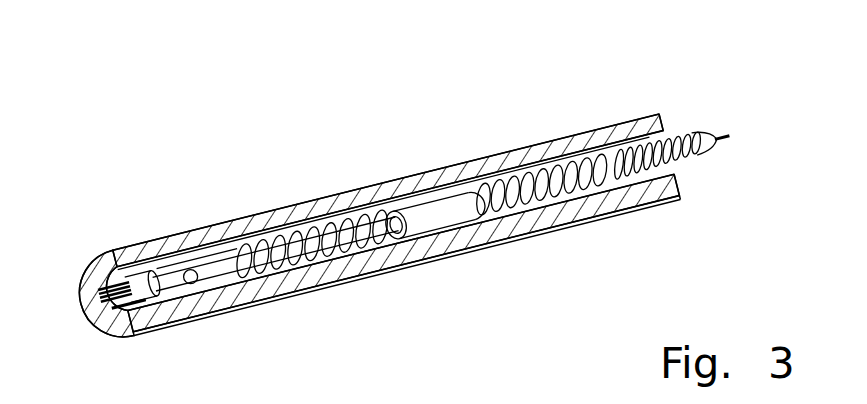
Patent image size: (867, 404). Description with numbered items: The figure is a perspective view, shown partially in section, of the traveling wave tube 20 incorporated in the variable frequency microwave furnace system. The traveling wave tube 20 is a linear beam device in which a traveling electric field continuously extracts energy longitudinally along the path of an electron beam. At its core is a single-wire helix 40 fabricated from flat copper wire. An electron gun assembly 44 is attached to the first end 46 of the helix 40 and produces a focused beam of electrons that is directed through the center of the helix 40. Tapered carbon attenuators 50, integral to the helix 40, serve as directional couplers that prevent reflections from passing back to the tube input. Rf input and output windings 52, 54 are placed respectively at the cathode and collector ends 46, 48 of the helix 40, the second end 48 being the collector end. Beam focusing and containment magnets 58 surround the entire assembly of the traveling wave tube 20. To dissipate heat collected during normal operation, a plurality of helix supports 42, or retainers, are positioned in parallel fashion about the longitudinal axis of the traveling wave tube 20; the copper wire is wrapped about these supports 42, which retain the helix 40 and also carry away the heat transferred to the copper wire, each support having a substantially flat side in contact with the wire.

The traveling wave tube 20 is at (178, 72).
The single-wire helix 40 is at (521, 281).
The helix supports 42 is at (539, 145).
The electron gun assembly 44 is at (195, 238).
The first end 46 is at (404, 300).
The second end 48 is at (678, 138).
The tapered carbon attenuators 50 is at (452, 216).
The rf input winding 52 is at (258, 215).
The rf output winding 54 is at (611, 125).
The beam focusing and containment magnets 58 is at (270, 224).